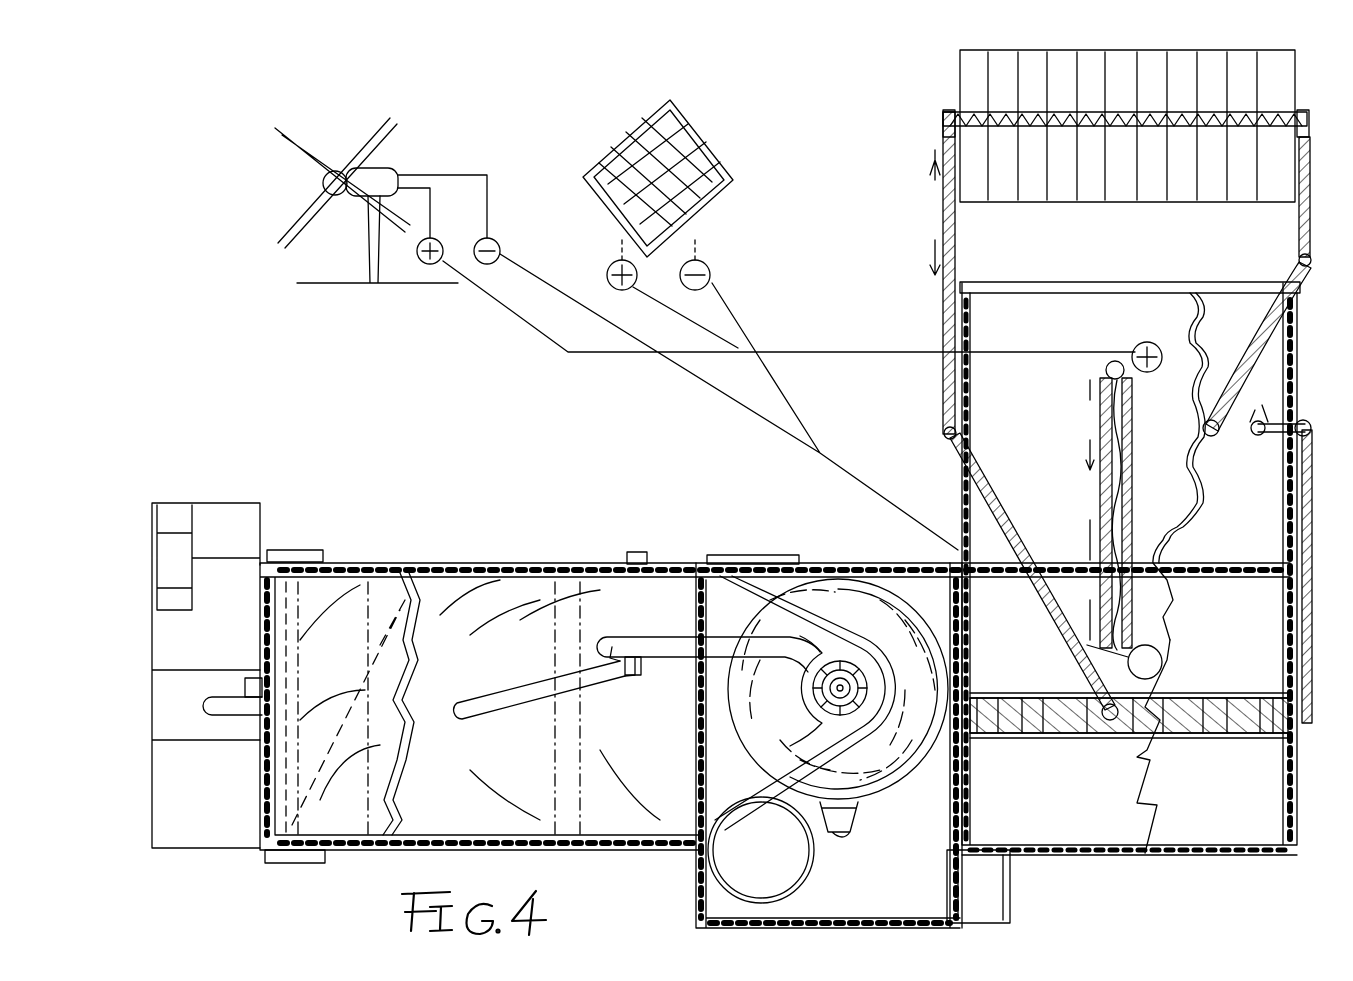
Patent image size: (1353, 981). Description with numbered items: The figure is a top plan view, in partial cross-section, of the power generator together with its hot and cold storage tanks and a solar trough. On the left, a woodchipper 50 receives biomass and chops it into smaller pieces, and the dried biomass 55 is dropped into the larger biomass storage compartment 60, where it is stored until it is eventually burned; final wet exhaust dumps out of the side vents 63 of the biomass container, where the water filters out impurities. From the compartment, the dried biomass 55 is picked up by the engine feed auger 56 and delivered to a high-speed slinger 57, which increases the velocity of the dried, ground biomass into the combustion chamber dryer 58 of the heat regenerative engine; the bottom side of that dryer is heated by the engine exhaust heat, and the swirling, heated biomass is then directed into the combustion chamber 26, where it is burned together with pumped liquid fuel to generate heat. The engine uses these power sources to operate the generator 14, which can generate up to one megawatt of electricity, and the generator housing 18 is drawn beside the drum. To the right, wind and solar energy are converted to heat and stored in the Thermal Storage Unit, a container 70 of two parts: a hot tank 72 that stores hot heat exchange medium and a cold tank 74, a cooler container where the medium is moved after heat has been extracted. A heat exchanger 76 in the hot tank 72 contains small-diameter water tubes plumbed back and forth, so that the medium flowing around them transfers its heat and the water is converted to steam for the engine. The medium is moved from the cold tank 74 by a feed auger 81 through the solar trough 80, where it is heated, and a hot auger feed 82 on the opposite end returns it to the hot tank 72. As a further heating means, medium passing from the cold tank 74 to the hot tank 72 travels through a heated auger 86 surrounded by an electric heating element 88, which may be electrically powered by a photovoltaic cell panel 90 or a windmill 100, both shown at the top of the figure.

The generator 14 is at (810, 868).
The drive housing 18 is at (688, 899).
The combustion chamber 26 is at (880, 790).
The woodchipper 50 is at (256, 494).
The dried biomass 55 is at (522, 658).
The engine feed auger 56 is at (560, 680).
The high-speed slinger 57 is at (680, 600).
The combustion chamber dryer 58 is at (880, 660).
The biomass storage compartment 60 is at (508, 556).
The side vents 63 is at (300, 555).
The Thermal Storage Unit container 70 is at (1126, 868).
The hot tank 72 is at (1200, 830).
The cold tank 74 is at (1130, 297).
The heat exchanger 76 is at (1040, 664).
The solar trough 80 is at (1136, 84).
The feed auger 81 is at (1182, 110).
The hot auger feed 82 is at (955, 248).
The heated auger 86 is at (1172, 445).
The electric heating element 88 is at (1128, 425).
The photovoltaic cell panel 90 is at (712, 147).
The windmill 100 is at (393, 156).